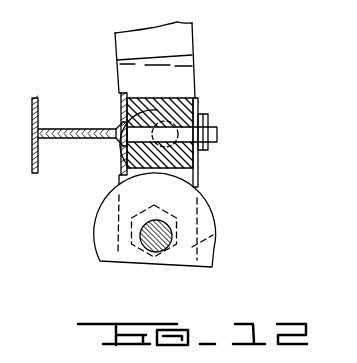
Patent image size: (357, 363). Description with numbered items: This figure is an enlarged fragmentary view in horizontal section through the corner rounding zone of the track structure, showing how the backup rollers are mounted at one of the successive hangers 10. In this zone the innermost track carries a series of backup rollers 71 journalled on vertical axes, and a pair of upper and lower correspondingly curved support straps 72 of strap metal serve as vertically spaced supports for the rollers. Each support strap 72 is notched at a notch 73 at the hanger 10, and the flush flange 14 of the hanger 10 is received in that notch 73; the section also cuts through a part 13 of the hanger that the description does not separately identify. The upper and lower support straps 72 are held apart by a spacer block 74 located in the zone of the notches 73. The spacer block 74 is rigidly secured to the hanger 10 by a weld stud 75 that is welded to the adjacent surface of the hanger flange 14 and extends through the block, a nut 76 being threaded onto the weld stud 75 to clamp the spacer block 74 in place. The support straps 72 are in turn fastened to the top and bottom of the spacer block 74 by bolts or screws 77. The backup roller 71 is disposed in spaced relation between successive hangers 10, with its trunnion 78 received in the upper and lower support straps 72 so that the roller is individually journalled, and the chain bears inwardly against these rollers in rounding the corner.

The hanger 10 is at (77, 116).
The rail web 13 is at (57, 129).
The flush flange 14 is at (113, 148).
The backup roller 71 is at (93, 236).
The support strap 72 is at (191, 60).
The notch 73 is at (121, 95).
The spacer block 74 is at (195, 104).
The weld stud 75 is at (121, 168).
The nut 76 is at (209, 132).
The bolt or screw 77 is at (200, 167).
The trunnion 78 is at (157, 253).